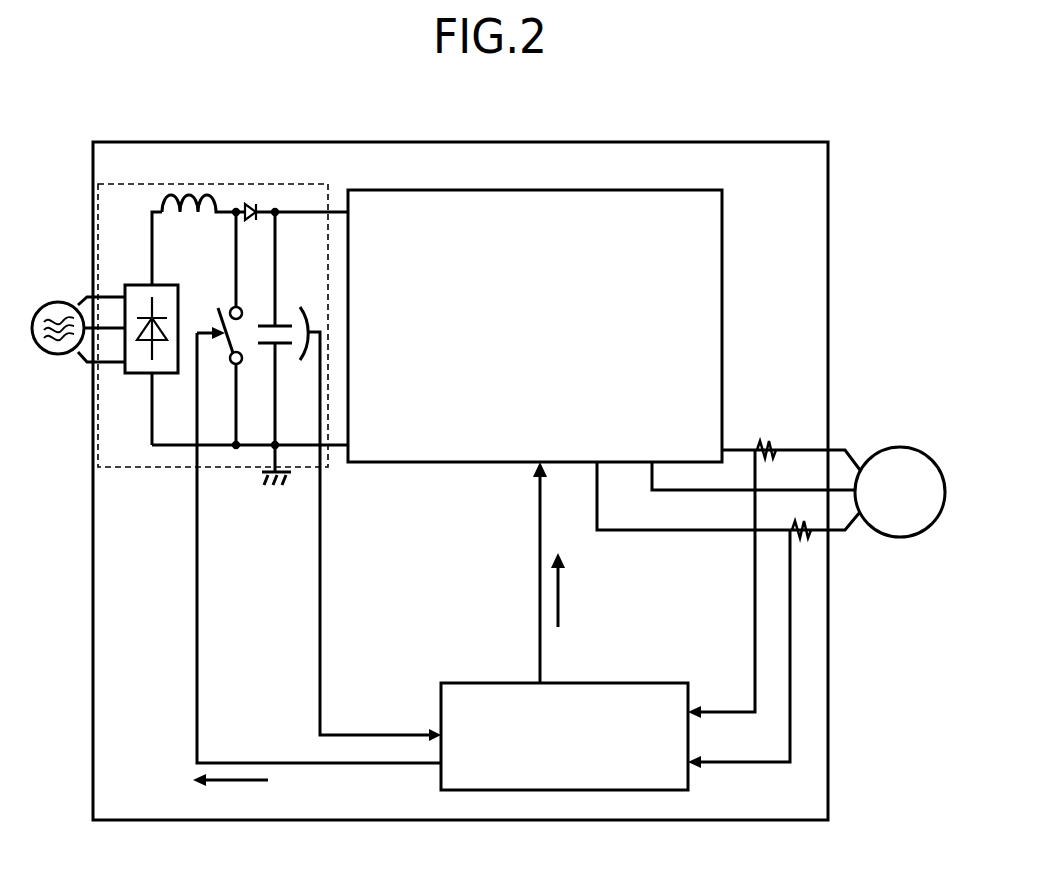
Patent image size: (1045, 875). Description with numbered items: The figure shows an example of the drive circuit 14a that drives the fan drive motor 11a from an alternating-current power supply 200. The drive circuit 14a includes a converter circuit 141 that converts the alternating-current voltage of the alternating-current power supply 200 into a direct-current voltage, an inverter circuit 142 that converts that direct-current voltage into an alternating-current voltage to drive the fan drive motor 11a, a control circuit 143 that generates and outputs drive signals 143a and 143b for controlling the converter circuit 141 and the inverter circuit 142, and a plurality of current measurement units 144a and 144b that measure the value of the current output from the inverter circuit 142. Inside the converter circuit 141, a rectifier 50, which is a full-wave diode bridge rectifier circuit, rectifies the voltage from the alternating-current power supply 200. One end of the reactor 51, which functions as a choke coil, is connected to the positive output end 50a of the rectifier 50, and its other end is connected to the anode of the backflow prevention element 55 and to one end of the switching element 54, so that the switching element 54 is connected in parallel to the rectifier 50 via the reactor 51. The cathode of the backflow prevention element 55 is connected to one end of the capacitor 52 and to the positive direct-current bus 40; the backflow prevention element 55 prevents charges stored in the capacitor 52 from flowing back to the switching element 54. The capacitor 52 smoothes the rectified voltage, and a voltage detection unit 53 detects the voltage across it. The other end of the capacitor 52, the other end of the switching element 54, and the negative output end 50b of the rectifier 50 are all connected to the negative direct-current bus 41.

The drive circuit 14a is at (700, 142).
The converter circuit 141 is at (301, 184).
The inverter circuit 142 is at (633, 189).
The control circuit 143 is at (622, 683).
The drive signal 143a is at (232, 782).
The drive signal 143b is at (560, 590).
The current measurement unit 144a is at (768, 440).
The current measurement unit 144b is at (800, 526).
The fan drive motor 11a is at (900, 447).
The alternating-current power supply 200 is at (57, 302).
The rectifier 50 is at (156, 286).
The positive output end 50a is at (150, 286).
The negative output end 50b is at (152, 373).
The reactor 51 is at (207, 192).
The capacitor 52 is at (267, 345).
The voltage detection unit 53 is at (302, 307).
The switching element 54 is at (236, 366).
The backflow prevention element 55 is at (250, 200).
The positive direct-current bus 40 is at (321, 212).
The negative direct-current bus 41 is at (305, 447).